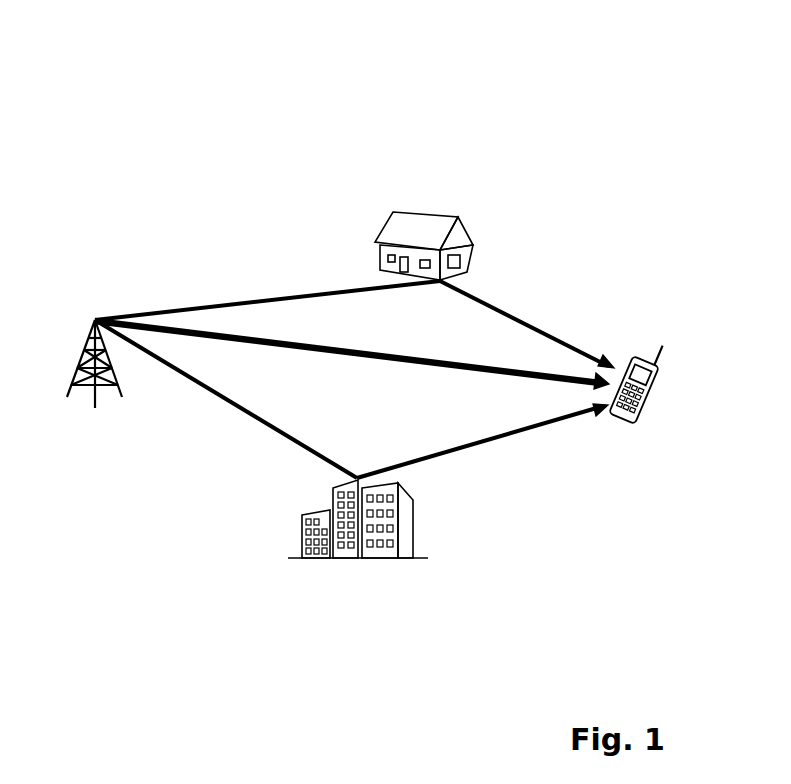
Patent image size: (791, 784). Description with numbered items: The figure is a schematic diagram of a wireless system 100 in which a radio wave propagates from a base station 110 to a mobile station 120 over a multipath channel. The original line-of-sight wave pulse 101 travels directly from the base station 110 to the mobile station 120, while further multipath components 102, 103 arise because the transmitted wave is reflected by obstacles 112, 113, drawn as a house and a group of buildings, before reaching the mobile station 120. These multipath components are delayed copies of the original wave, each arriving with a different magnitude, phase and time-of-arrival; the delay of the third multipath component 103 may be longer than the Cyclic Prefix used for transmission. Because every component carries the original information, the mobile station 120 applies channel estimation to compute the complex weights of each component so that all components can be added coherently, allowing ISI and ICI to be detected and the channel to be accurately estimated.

The wireless system 100 is at (303, 97).
The line-of-sight wave pulse 101 is at (237, 333).
The multipath component 102 is at (195, 305).
The third multipath component 103 is at (262, 430).
The base station 110 is at (90, 302).
The obstacle 112 is at (437, 203).
The obstacle 113 is at (363, 572).
The mobile station 120 is at (660, 335).